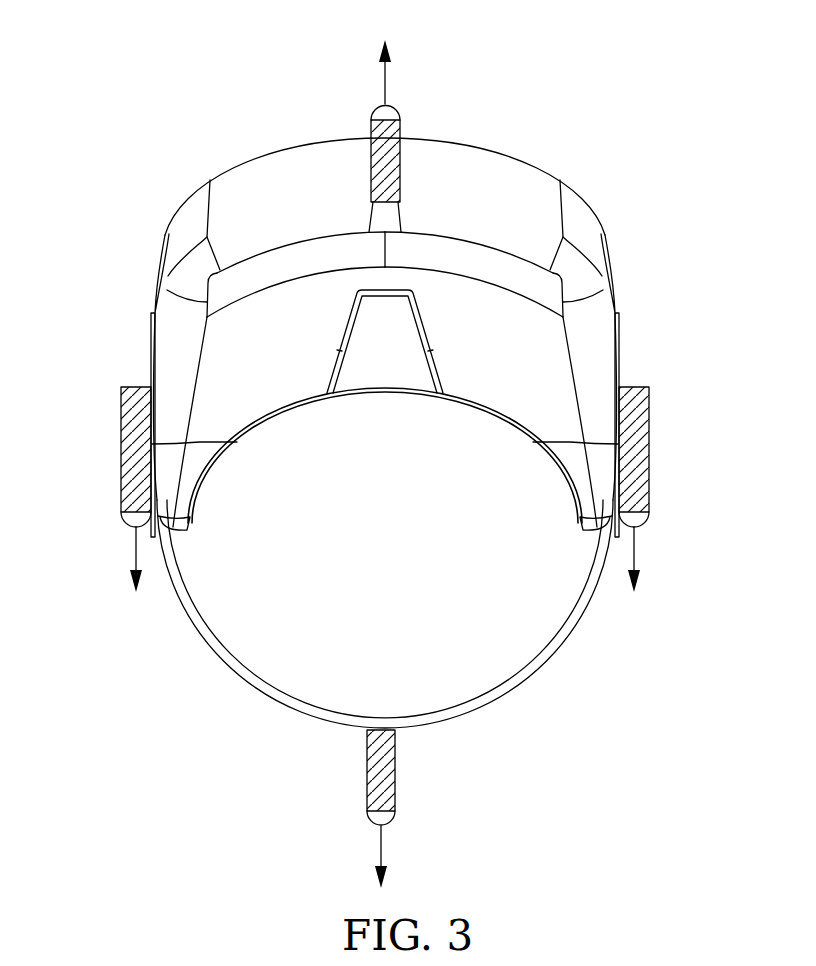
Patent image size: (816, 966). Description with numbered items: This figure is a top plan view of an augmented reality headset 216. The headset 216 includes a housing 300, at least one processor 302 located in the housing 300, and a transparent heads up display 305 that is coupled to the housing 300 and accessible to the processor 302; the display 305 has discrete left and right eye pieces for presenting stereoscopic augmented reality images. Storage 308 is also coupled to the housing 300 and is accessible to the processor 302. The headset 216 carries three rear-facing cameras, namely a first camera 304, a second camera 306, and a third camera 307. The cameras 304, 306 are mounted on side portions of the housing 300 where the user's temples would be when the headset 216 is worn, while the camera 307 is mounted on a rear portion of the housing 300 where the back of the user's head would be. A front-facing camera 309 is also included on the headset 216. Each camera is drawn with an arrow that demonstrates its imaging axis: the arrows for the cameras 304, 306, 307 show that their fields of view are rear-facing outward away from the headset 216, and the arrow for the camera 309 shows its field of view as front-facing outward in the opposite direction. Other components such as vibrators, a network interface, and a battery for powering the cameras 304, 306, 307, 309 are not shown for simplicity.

The headset 216 is at (130, 42).
The housing 300 is at (550, 655).
The processor 302 is at (270, 284).
The first rear-facing camera 304 is at (121, 448).
The transparent heads up display 305 is at (283, 150).
The second rear-facing camera 306 is at (649, 451).
The third rear-facing camera 307 is at (396, 770).
The storage 308 is at (480, 283).
The front-facing camera 309 is at (402, 166).